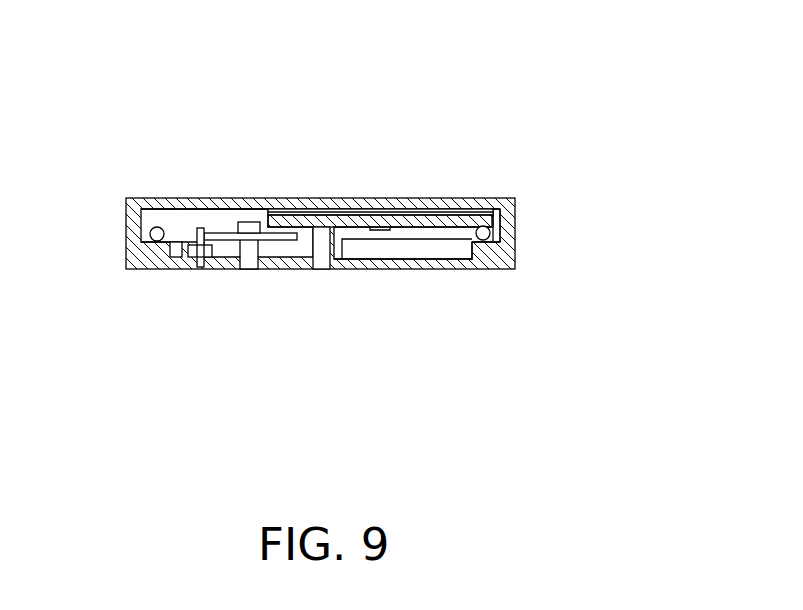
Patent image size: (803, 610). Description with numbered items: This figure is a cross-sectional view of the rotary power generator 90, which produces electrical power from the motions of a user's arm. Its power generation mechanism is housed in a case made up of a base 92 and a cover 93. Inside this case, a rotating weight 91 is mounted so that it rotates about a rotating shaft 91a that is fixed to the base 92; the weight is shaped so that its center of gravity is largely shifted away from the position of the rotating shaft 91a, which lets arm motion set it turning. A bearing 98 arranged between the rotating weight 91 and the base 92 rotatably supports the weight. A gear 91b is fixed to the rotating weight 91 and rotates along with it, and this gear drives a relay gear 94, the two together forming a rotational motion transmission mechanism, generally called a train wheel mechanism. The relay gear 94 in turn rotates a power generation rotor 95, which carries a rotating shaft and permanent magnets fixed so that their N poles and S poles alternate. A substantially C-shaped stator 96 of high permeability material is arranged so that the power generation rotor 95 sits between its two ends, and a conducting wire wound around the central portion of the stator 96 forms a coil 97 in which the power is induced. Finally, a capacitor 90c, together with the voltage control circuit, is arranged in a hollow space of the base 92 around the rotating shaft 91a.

The rotary power generator 90 is at (518, 277).
The capacitor 90c is at (402, 252).
The rotating weight 91 is at (430, 220).
The rotating shaft 91a is at (322, 248).
The gear 91b is at (268, 227).
The base 92 is at (488, 260).
The cover 93 is at (455, 207).
The relay gear 94 is at (210, 227).
The power generation rotor 95 is at (203, 267).
The stator 96 is at (185, 258).
The coil 97 is at (168, 245).
The bearing 98 is at (488, 228).